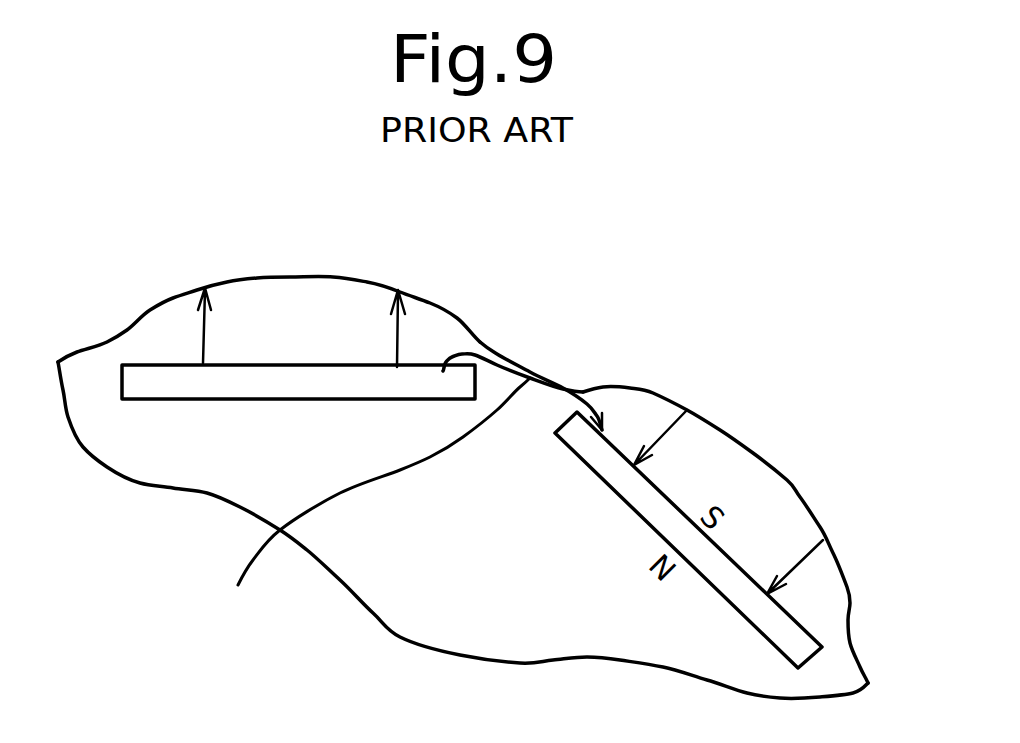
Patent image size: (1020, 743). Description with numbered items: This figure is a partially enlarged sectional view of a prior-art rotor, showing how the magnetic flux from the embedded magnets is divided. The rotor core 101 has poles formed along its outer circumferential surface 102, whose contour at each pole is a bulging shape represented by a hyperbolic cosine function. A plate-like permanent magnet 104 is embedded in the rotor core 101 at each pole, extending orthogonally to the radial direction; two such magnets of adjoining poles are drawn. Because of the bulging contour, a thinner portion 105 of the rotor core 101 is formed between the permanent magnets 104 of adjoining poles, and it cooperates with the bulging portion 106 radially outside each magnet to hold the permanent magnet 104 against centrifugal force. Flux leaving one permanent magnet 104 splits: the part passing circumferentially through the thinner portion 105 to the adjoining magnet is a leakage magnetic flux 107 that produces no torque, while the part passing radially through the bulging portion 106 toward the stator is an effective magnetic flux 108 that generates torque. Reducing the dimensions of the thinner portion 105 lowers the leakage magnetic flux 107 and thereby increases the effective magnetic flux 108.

The rotor core 101 is at (860, 597).
The outer circumferential surface 102 is at (350, 277).
The permanent magnet 104 is at (203, 333).
The thinner portion 105 is at (497, 354).
The bulging portion 106 is at (255, 300).
The leakage magnetic flux 107 is at (369, 502).
The effective magnetic flux 108 is at (158, 382).